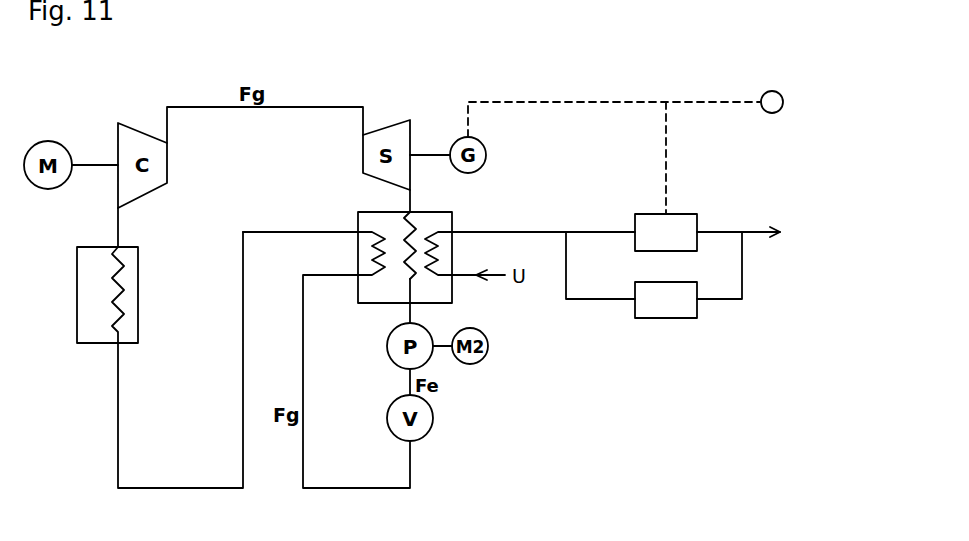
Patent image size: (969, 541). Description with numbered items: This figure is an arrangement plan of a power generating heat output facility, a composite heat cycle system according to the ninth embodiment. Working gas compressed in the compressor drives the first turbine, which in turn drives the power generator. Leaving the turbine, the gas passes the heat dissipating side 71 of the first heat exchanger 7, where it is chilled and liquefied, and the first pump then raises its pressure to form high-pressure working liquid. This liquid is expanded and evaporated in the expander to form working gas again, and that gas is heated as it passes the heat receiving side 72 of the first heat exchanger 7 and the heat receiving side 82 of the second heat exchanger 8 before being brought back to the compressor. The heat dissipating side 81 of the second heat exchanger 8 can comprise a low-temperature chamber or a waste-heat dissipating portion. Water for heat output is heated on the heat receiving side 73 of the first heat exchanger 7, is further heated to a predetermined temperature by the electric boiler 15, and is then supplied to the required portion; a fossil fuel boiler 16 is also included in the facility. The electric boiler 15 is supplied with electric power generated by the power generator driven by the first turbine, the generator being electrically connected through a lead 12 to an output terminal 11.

The first heat exchanger 7 is at (404, 244).
The heat dissipating side 71 is at (415, 228).
The heat receiving side 72 is at (364, 252).
The heat receiving side 73 is at (454, 256).
The second heat exchanger 8 is at (99, 295).
The heat dissipating side 81 is at (93, 295).
The heat receiving side 82 is at (124, 310).
The output terminal 11 is at (771, 91).
The lead 12 is at (581, 101).
The electric boiler 15 is at (690, 213).
The fossil fuel boiler 16 is at (672, 319).